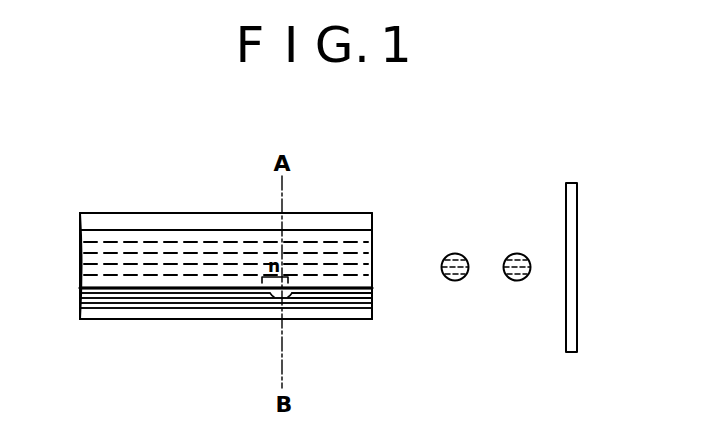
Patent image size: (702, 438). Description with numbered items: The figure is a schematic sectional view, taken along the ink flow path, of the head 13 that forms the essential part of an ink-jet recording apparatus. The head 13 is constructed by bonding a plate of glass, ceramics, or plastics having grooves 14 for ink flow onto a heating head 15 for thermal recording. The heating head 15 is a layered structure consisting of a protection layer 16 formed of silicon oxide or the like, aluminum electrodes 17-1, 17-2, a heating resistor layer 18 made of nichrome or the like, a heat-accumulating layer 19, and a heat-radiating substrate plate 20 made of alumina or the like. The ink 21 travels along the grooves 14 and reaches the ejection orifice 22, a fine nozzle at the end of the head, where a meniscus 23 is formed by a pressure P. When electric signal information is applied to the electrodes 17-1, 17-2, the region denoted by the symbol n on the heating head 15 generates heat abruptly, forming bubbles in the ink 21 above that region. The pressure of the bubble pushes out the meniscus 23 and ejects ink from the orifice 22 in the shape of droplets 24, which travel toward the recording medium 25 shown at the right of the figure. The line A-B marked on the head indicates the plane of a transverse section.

The head 13 is at (165, 213).
The grooves 14 is at (233, 230).
The heating head 15 is at (214, 330).
The protection layer 16 is at (105, 290).
The aluminum electrode 17-1 is at (143, 300).
The aluminum electrode 17-2 is at (353, 297).
The heating resistor layer 18 is at (194, 303).
The heat-accumulating layer 19 is at (238, 310).
The heat-radiating substrate plate 20 is at (304, 319).
The ink 21 is at (98, 240).
The ejection orifice 22 is at (380, 282).
The meniscus 23 is at (373, 258).
The droplets 24 is at (437, 250).
The recording medium 25 is at (565, 225).